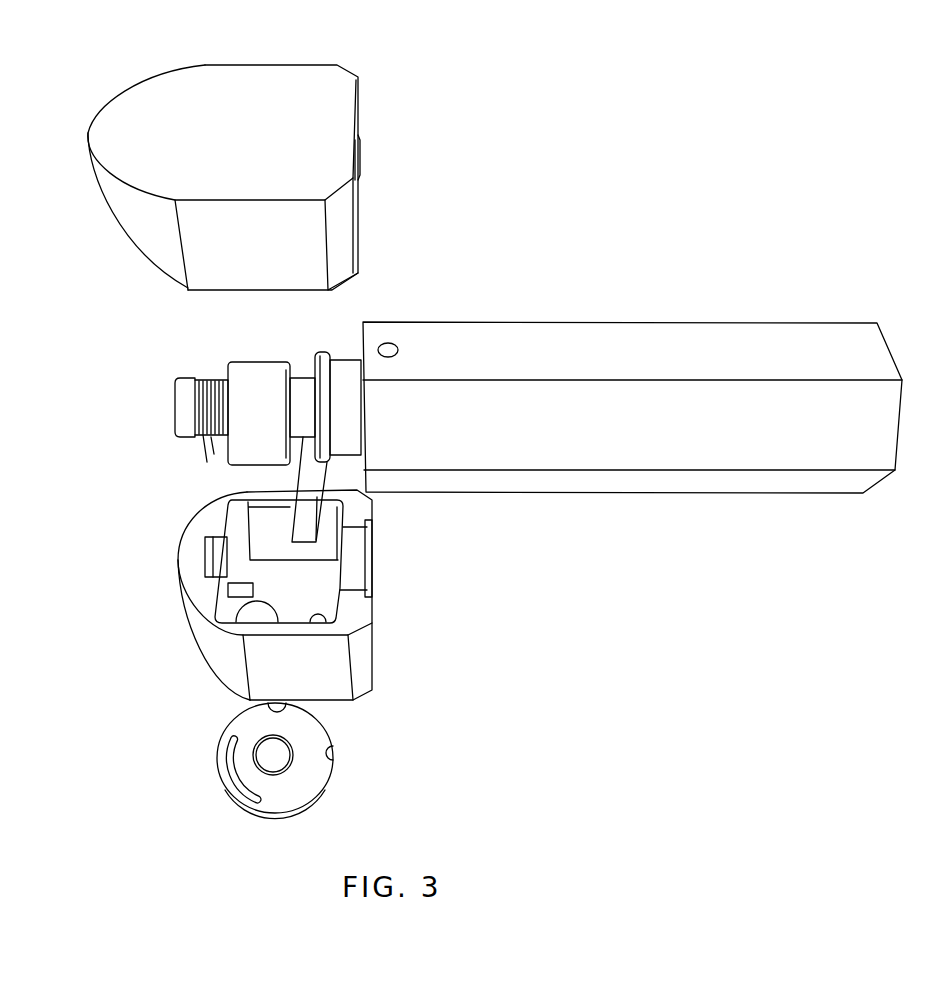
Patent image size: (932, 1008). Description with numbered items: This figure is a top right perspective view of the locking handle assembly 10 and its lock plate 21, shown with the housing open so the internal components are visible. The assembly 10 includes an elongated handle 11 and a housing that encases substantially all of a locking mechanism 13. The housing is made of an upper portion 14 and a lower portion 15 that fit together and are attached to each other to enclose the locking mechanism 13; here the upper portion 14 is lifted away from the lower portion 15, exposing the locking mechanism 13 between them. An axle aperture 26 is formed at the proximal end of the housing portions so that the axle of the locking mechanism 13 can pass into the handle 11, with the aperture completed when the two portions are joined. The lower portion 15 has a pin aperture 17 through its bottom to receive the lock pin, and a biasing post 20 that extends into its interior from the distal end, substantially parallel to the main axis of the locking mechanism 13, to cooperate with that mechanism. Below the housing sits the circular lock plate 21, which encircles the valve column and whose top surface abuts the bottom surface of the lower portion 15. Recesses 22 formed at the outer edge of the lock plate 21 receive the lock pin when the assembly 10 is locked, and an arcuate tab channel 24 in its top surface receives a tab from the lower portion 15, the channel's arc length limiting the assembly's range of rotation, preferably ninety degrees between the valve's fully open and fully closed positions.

The assembly 10 is at (790, 76).
The handle 11 is at (608, 493).
The locking mechanism 13 is at (360, 317).
The upper portion 14 is at (282, 64).
The lower portion 15 is at (172, 553).
The pin aperture 17 is at (323, 610).
The biasing post 20 is at (248, 583).
The lock plate 21 is at (225, 737).
The recesses 22 is at (336, 757).
The tab channel 24 is at (227, 780).
The axle aperture 26 is at (386, 583).